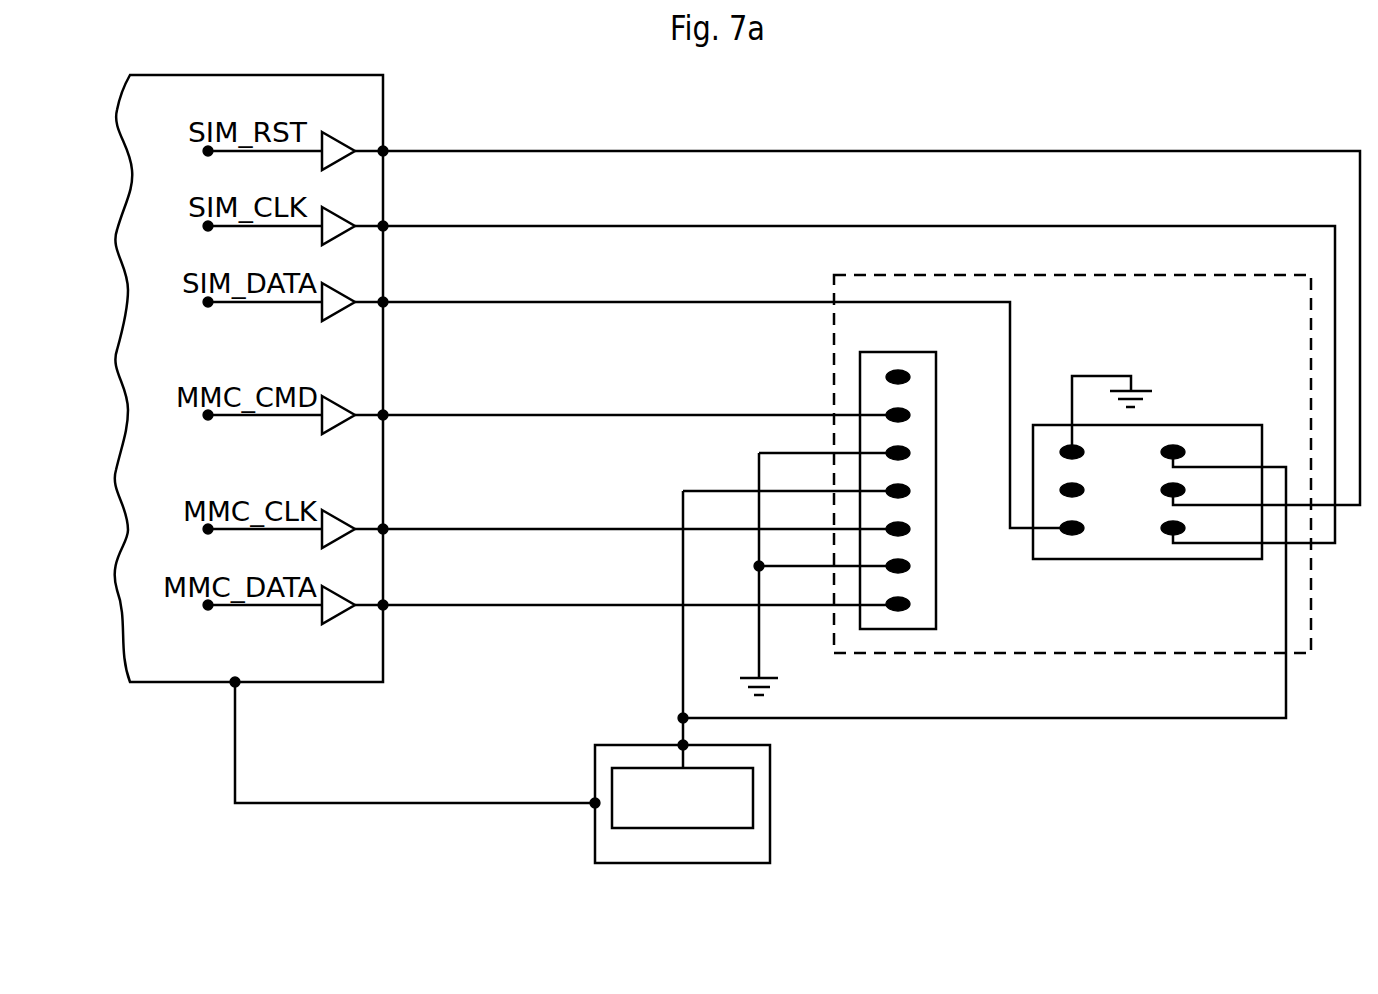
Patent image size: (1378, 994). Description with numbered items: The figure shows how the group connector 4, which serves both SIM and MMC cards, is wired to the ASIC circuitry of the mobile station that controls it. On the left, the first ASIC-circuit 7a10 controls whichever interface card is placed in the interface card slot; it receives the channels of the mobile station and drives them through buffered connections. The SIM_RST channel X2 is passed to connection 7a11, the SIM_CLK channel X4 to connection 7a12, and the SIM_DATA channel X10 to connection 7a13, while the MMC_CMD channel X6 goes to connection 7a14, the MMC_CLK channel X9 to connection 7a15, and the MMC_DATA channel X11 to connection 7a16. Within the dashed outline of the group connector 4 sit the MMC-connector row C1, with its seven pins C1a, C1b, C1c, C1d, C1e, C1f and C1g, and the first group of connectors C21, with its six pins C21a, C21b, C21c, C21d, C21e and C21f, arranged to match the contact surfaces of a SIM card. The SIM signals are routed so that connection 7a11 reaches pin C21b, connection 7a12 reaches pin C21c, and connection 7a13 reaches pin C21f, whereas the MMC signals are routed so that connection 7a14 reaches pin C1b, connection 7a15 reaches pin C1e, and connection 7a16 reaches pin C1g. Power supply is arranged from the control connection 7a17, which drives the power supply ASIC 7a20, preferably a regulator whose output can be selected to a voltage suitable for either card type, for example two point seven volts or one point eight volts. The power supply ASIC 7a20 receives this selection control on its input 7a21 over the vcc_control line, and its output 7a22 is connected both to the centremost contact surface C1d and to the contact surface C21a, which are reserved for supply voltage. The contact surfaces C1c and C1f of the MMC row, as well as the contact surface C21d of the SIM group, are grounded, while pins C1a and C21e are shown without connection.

The first ASIC-circuit 7a10 is at (385, 87).
The SIM_RST connection 7a11 is at (386, 144).
The SIM_CLK connection 7a12 is at (386, 220).
The SIM_DATA connection 7a13 is at (386, 296).
The MMC_CMD connection 7a14 is at (386, 410).
The MMC_CLK connection 7a15 is at (386, 524).
The MMC_DATA connection 7a16 is at (386, 600).
The control connection 7a17 is at (237, 686).
The power supply ASIC 7a20 is at (772, 797).
The input of power supply ASIC 7a21 is at (595, 800).
The output of power supply ASIC 7a22 is at (683, 745).
The first group connector 4 is at (834, 278).
The MMC-connector row C1 is at (874, 483).
The first group of connectors C21 is at (1158, 458).
The SIM_RST channel X2 is at (207, 156).
The SIM_CLK channel X4 is at (207, 231).
The SIM_DATA channel X10 is at (207, 307).
The MMC_CMD channel X6 is at (207, 420).
The MMC_CLK channel X9 is at (207, 534).
The MMC_DATA channel X11 is at (207, 610).
The MMC connector pin C1a is at (939, 376).
The MMC_CMD contact pin C1b is at (939, 414).
The grounded MMC contact surface C1c is at (939, 452).
The supply voltage contact surface C1d is at (939, 490).
The MMC_CLK contact pin C1e is at (939, 528).
The grounded MMC contact surface C1f is at (938, 565).
The MMC_DATA contact pin C1g is at (939, 603).
The supply voltage contact surface C21a is at (1206, 452).
The SIM_RST contact pin C21b is at (1206, 490).
The SIM_CLK contact pin C21c is at (1205, 528).
The grounded SIM contact surface C21d is at (1106, 452).
The SIM connector pin C21e is at (1106, 490).
The SIM_DATA contact pin C21f is at (1103, 528).